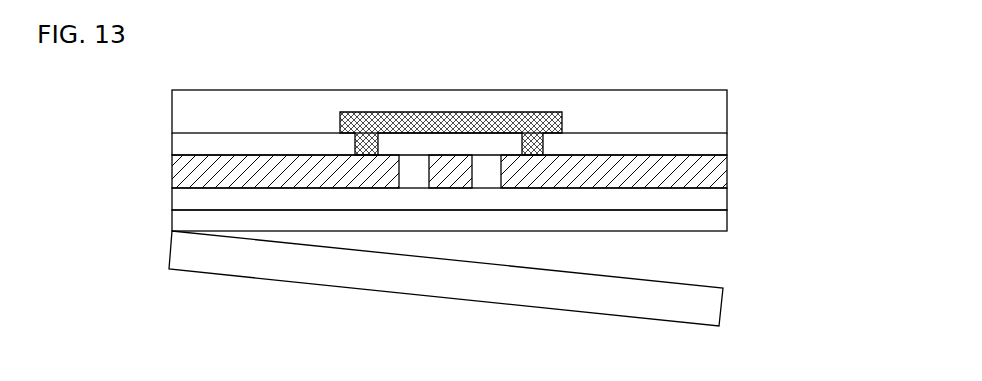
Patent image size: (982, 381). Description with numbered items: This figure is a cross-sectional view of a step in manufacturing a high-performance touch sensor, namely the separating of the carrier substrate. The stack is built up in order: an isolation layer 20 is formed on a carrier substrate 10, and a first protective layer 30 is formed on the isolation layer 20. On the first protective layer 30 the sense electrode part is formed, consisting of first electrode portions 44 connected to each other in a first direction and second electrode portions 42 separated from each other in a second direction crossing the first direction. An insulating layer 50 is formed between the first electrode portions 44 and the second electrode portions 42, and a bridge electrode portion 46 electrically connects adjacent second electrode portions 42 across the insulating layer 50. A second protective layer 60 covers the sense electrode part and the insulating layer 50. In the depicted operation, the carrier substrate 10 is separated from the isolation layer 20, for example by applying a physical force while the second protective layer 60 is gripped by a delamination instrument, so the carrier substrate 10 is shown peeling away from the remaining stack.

The carrier substrate 10 is at (715, 304).
The isolation layer 20 is at (722, 220).
The first protective layer 30 is at (722, 195).
The second electrode portions 42 is at (333, 162).
The first electrode portions 44 is at (459, 170).
The bridge electrode portion 46 is at (393, 116).
The insulating layer 50 is at (501, 143).
The second protective layer 60 is at (648, 102).